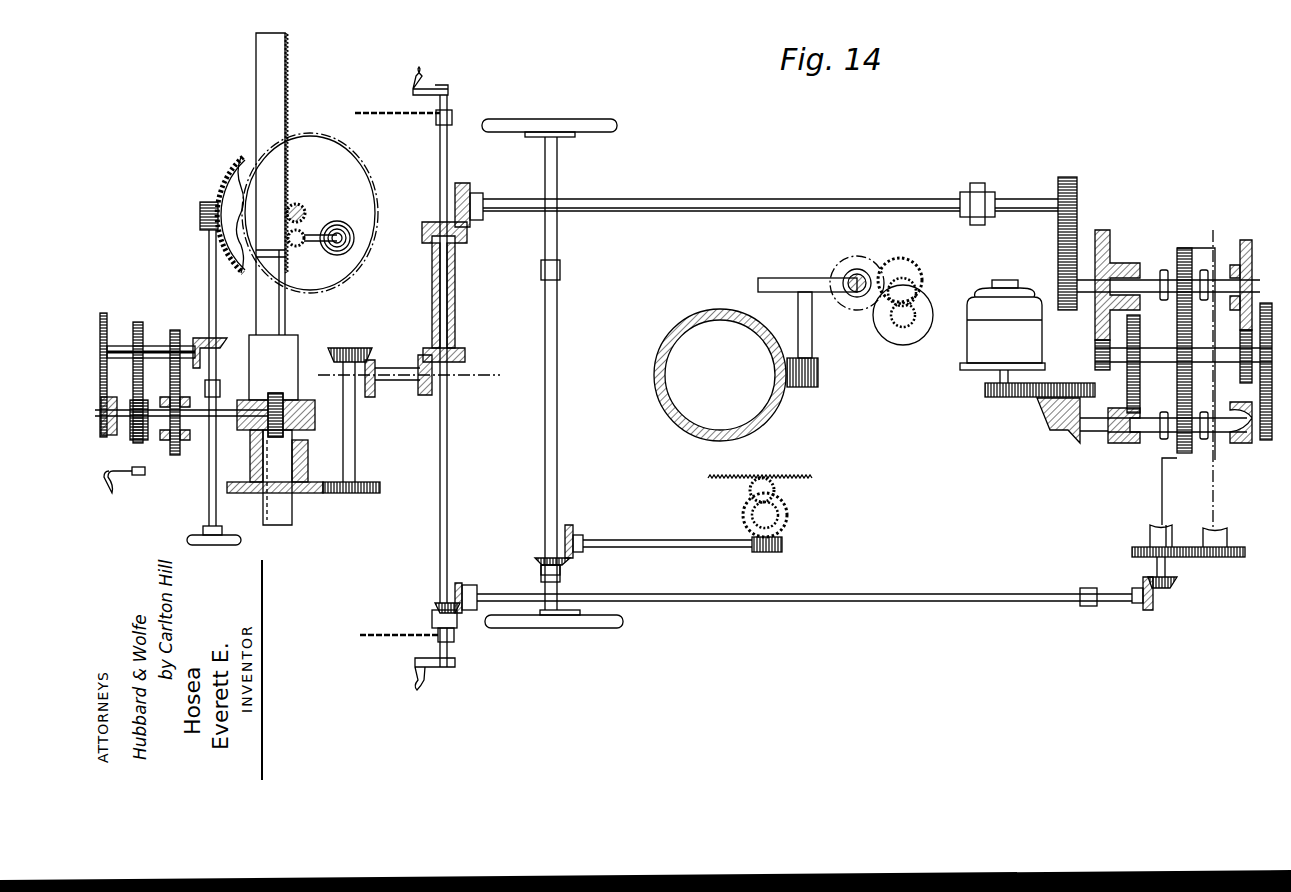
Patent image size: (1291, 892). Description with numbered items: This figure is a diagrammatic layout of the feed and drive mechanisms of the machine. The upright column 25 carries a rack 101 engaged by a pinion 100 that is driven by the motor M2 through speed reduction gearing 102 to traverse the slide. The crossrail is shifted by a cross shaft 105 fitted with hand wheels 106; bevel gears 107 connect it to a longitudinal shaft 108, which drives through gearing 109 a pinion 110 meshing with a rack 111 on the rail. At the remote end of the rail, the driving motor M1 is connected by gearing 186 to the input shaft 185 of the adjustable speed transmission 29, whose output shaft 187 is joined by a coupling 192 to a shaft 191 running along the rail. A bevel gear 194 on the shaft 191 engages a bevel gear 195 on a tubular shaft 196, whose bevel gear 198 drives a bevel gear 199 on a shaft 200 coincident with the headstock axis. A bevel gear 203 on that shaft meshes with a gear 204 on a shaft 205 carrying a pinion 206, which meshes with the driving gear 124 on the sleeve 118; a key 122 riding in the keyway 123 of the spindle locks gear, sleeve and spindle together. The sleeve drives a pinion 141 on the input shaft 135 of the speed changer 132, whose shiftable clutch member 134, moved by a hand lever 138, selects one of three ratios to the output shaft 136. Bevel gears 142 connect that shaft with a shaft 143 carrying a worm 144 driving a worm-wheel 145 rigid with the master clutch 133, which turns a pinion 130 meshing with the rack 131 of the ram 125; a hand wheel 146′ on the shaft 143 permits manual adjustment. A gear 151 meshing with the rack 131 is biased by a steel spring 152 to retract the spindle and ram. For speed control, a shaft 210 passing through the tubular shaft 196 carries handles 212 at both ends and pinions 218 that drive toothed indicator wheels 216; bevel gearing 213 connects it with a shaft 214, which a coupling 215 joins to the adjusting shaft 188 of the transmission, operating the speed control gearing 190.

The upright column 25 is at (667, 325).
The adjustable speed transmission 29 is at (1176, 220).
The pinion 100 is at (818, 378).
The rack 101 is at (788, 387).
The speed reduction gearing 102 is at (884, 252).
The cross shaft 105 is at (557, 380).
The hand wheels 106 is at (599, 119).
The bevel gears 107 is at (578, 573).
The shaft 108 is at (665, 540).
The gearing 109 is at (793, 518).
The pinion 110 is at (776, 490).
The rack 111 is at (759, 488).
The sleeve 118 is at (304, 460).
The key 122 is at (254, 464).
The keyway 123 is at (262, 500).
The driving gear 124 is at (315, 493).
The ram 125 is at (256, 100).
The pinion 130 is at (297, 206).
The rack 131 is at (285, 96).
The speed changer 132 is at (132, 315).
The master clutch 133 is at (358, 158).
The shiftable clutch member 134 is at (142, 440).
The input shaft 135 is at (224, 414).
The output shaft 136 is at (184, 344).
The hand lever 138 is at (134, 476).
The pinion 141 is at (272, 400).
The bevel gears 142 is at (222, 363).
The shaft 143 is at (209, 251).
The worm 144 is at (200, 219).
The worm-wheel 145 is at (225, 170).
The hand wheel 146′ is at (236, 540).
The gear 151 is at (300, 246).
The spring 152 is at (345, 229).
The input shaft 185 is at (1093, 432).
The gearing 186 is at (1056, 422).
The output shaft 187 is at (1018, 196).
The adjusting shaft 188 is at (1138, 599).
The gearing 190 is at (1211, 564).
The shaft 191 is at (695, 200).
The coupling 192 is at (976, 183).
The bevel gear 194 is at (462, 184).
The bevel gear 195 is at (422, 226).
The tubular shaft 196 is at (455, 306).
The bevel gear 198 is at (458, 356).
The bevel gear 199 is at (425, 395).
The shaft 200 is at (392, 368).
The bevel gear 203 is at (368, 395).
The bevel gear 204 is at (332, 355).
The shaft 205 is at (356, 441).
The pinion 206 is at (378, 490).
The shaft 210 is at (440, 541).
The handles 212 is at (419, 68).
The bevel gearing 213 is at (459, 582).
The shaft 214 is at (1008, 595).
The coupling 215 is at (1084, 588).
The toothed indicator wheels 216 is at (374, 112).
The pinions 218 is at (452, 114).
The driving motor M1 is at (1030, 297).
The motor M2 is at (902, 345).